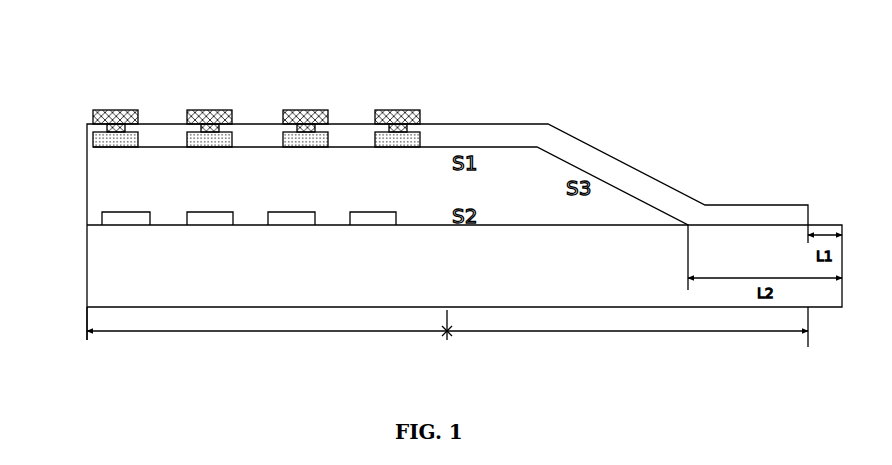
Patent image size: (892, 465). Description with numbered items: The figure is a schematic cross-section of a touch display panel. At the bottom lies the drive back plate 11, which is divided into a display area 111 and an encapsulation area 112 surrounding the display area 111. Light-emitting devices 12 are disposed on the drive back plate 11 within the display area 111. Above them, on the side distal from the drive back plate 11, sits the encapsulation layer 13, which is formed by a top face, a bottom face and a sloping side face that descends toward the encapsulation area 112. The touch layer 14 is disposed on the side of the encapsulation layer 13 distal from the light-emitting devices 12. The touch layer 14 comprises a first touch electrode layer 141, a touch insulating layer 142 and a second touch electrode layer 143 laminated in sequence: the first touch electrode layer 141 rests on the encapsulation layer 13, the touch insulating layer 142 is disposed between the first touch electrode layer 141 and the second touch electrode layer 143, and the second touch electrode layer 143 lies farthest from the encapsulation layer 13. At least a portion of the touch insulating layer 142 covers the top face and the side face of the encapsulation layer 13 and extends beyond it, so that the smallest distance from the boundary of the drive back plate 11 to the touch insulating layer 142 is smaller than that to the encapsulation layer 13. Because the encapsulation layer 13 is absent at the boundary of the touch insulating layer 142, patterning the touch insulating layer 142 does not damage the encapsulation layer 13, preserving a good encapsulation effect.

The drive back plate 11 is at (100, 265).
The display area 111 is at (270, 333).
The encapsulation area 112 is at (638, 333).
The light-emitting device 12 is at (100, 220).
The encapsulation layer 13 is at (100, 178).
The touch layer 14 is at (320, 76).
The first touch electrode layer 141 is at (142, 133).
The touch insulating layer 142 is at (159, 57).
The second touch electrode layer 143 is at (329, 111).